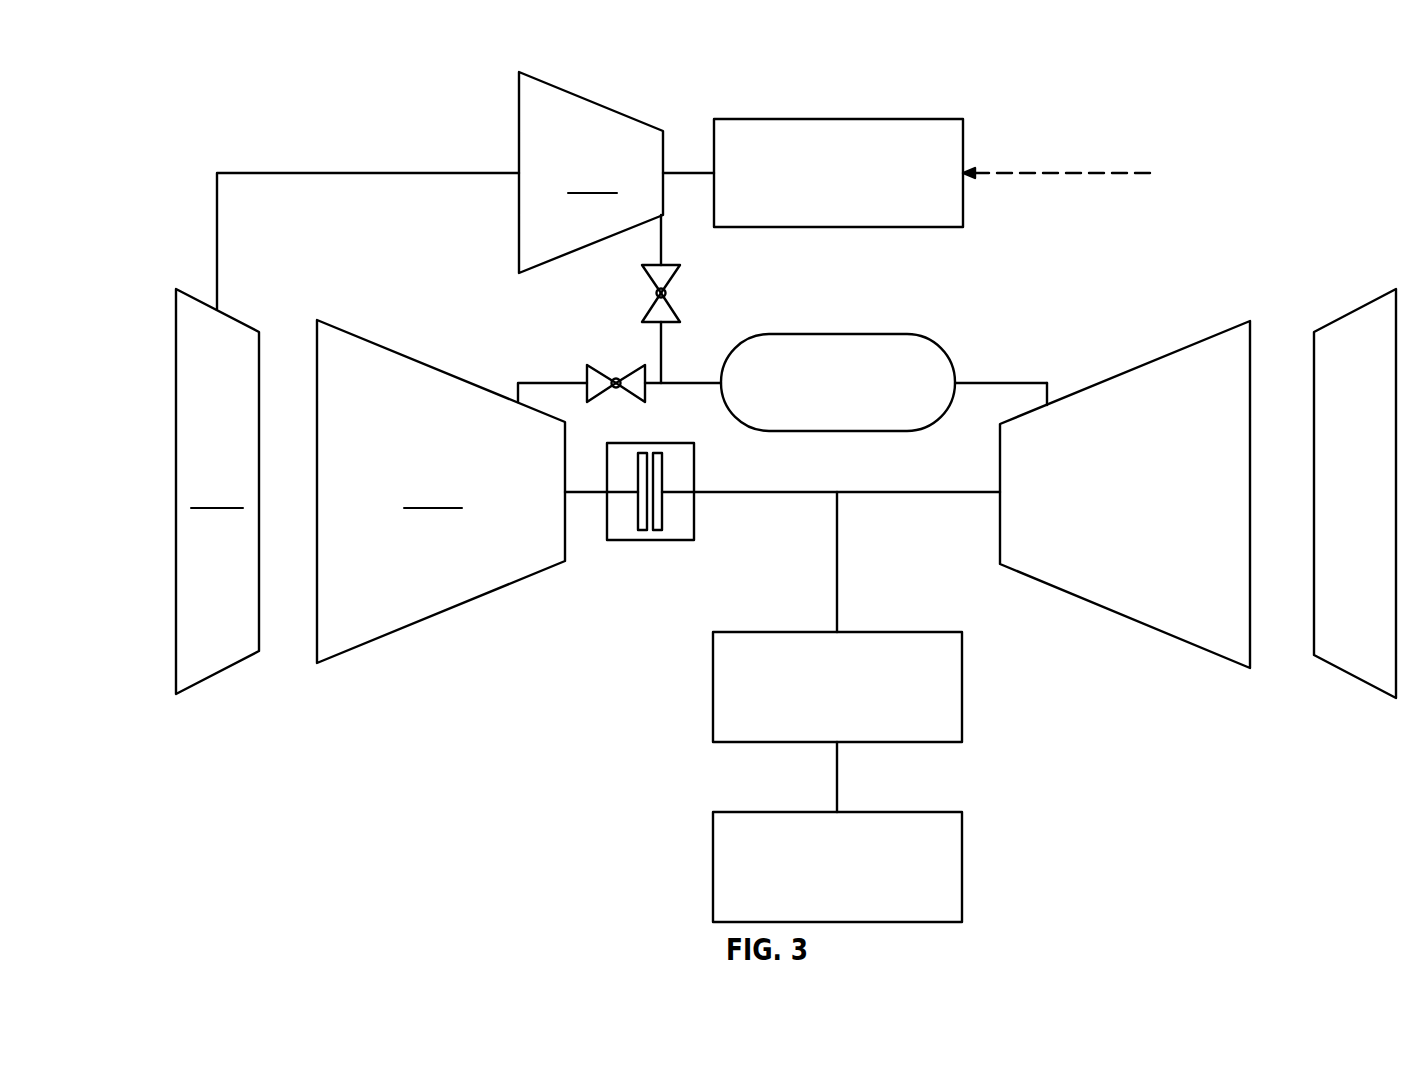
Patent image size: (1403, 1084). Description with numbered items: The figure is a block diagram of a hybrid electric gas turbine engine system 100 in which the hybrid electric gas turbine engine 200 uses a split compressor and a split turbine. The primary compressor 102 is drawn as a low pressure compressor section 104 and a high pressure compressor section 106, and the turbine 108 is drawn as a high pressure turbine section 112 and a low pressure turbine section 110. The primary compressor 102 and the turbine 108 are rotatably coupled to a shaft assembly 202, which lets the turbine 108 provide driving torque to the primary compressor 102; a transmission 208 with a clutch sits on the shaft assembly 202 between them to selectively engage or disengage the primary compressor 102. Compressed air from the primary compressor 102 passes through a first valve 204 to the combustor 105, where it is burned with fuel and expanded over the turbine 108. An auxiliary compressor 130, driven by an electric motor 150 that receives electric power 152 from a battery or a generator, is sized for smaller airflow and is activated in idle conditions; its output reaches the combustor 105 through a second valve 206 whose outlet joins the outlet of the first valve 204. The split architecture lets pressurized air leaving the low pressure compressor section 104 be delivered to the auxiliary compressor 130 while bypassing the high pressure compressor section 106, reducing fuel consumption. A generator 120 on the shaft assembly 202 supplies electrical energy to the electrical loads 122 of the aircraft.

The hybrid electric gas turbine engine system 100 is at (1052, 68).
The primary compressor 102 is at (476, 733).
The low pressure compressor section 104 is at (238, 319).
The combustor 105 is at (839, 333).
The high pressure compressor section 106 is at (395, 350).
The turbine 108 is at (1213, 733).
The low pressure turbine section 110 is at (1354, 309).
The high pressure turbine section 112 is at (1125, 371).
The generator 120 is at (896, 632).
The electrical loads 122 is at (896, 812).
The auxiliary compressor 130 is at (597, 98).
The electric motor 150 is at (896, 119).
The electric power 152 is at (1053, 172).
The hybrid electric gas turbine engine 200 is at (636, 590).
The shaft assembly 202 is at (886, 491).
The first valve 204 is at (586, 375).
The second valve 206 is at (674, 276).
The transmission 208 is at (676, 552).